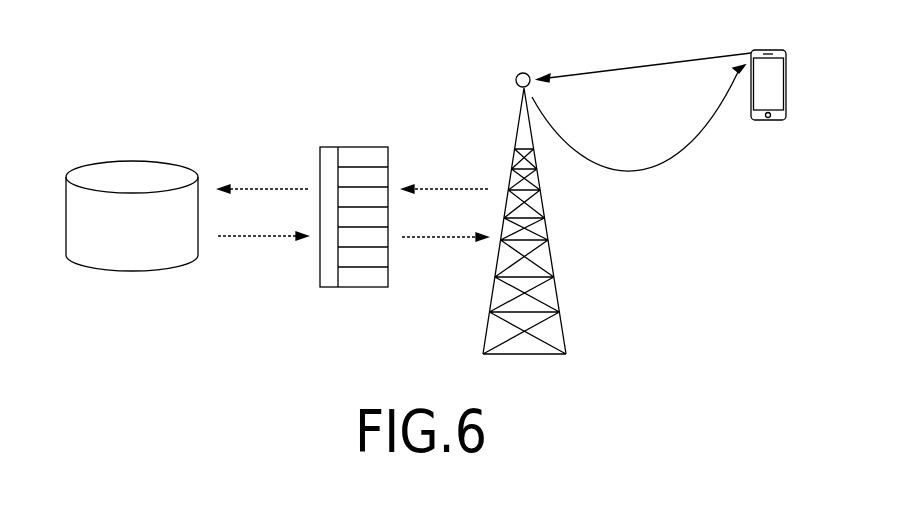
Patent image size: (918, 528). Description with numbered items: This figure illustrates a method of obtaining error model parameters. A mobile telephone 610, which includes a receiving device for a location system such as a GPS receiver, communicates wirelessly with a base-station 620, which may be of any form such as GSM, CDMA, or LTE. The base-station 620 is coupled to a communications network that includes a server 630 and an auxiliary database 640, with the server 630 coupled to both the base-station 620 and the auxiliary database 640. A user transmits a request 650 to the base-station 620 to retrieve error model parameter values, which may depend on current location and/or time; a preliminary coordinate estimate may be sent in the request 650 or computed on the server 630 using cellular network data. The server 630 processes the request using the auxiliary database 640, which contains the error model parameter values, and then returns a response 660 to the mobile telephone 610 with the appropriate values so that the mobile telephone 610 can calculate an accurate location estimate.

The mobile telephone 610 is at (786, 80).
The base-station 620 is at (557, 296).
The server 630 is at (352, 147).
The auxiliary database 640 is at (131, 159).
The request 650 is at (641, 66).
The response 660 is at (632, 176).